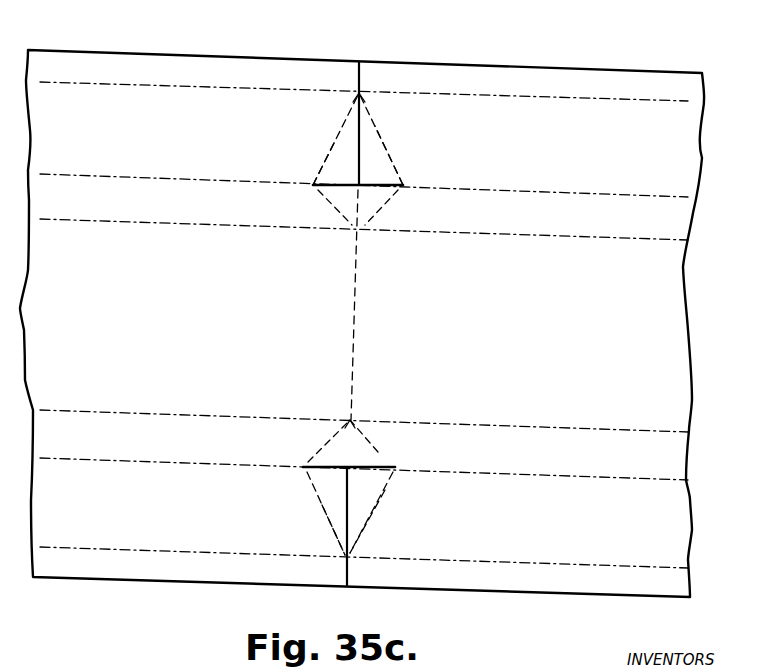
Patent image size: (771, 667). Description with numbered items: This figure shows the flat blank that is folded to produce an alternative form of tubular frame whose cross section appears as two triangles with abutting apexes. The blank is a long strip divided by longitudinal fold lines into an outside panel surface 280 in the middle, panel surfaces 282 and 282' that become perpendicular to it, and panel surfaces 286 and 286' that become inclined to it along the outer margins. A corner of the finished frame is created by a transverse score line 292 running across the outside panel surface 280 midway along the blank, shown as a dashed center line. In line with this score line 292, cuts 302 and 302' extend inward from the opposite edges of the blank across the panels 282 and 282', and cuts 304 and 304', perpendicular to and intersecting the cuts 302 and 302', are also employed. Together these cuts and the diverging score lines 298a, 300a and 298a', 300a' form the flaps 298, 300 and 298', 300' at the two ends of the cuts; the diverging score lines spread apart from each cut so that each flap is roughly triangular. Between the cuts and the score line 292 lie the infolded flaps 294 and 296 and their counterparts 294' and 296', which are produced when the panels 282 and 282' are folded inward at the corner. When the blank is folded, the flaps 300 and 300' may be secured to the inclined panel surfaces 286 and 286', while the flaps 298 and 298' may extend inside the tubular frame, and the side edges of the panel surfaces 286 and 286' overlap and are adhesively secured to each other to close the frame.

The outside panel surface 280 is at (670, 295).
The panel surface 282 is at (392, 221).
The panel surface 282' is at (387, 445).
The panel surface 286 is at (393, 139).
The panel surface 286' is at (391, 545).
The score line 292 is at (353, 312).
The infolded flap 294 is at (321, 233).
The infolded flap 294' is at (323, 424).
The infolded flap 296 is at (387, 233).
The infolded flap 296' is at (394, 423).
The flap 298 is at (400, 139).
The flap 298' is at (397, 512).
The diverging score line 298a is at (425, 111).
The diverging score line 298a' is at (401, 521).
The flap 300 is at (315, 139).
The flap 300' is at (303, 513).
The diverging score line 300a is at (296, 149).
The diverging score line 300a' is at (303, 530).
The cut 302 is at (337, 109).
The cut 302' is at (376, 541).
The cut 304 is at (382, 171).
The cut 304' is at (377, 454).